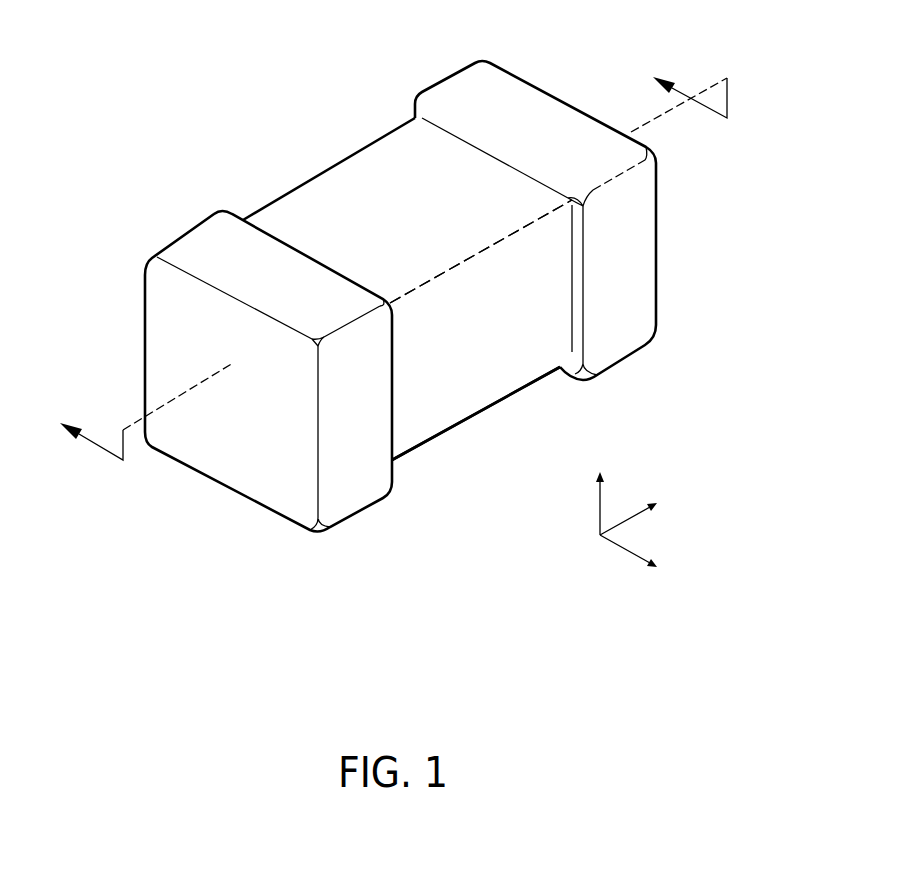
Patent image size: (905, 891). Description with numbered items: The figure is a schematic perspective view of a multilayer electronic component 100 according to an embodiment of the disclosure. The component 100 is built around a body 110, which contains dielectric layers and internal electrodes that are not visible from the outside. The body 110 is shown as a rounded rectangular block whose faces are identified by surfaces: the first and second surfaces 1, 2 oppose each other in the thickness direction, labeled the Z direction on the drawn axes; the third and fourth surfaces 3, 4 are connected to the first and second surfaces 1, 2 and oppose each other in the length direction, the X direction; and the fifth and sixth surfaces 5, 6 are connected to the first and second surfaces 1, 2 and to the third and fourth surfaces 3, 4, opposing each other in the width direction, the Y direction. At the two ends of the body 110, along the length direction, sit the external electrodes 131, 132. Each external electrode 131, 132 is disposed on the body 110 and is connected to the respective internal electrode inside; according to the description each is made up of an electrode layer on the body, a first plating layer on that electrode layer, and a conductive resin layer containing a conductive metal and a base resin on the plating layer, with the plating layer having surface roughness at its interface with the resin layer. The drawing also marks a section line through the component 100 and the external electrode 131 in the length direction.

The multilayer electronic component 100 is at (202, 70).
The body 110 is at (278, 227).
The external electrode 131 is at (202, 243).
The external electrode 132 is at (458, 97).
The first surface 1 is at (442, 380).
The second surface 2 is at (418, 180).
The third surface 3 is at (238, 427).
The fourth surface 4 is at (606, 233).
The fifth surface 5 is at (497, 350).
The sixth surface 6 is at (361, 197).